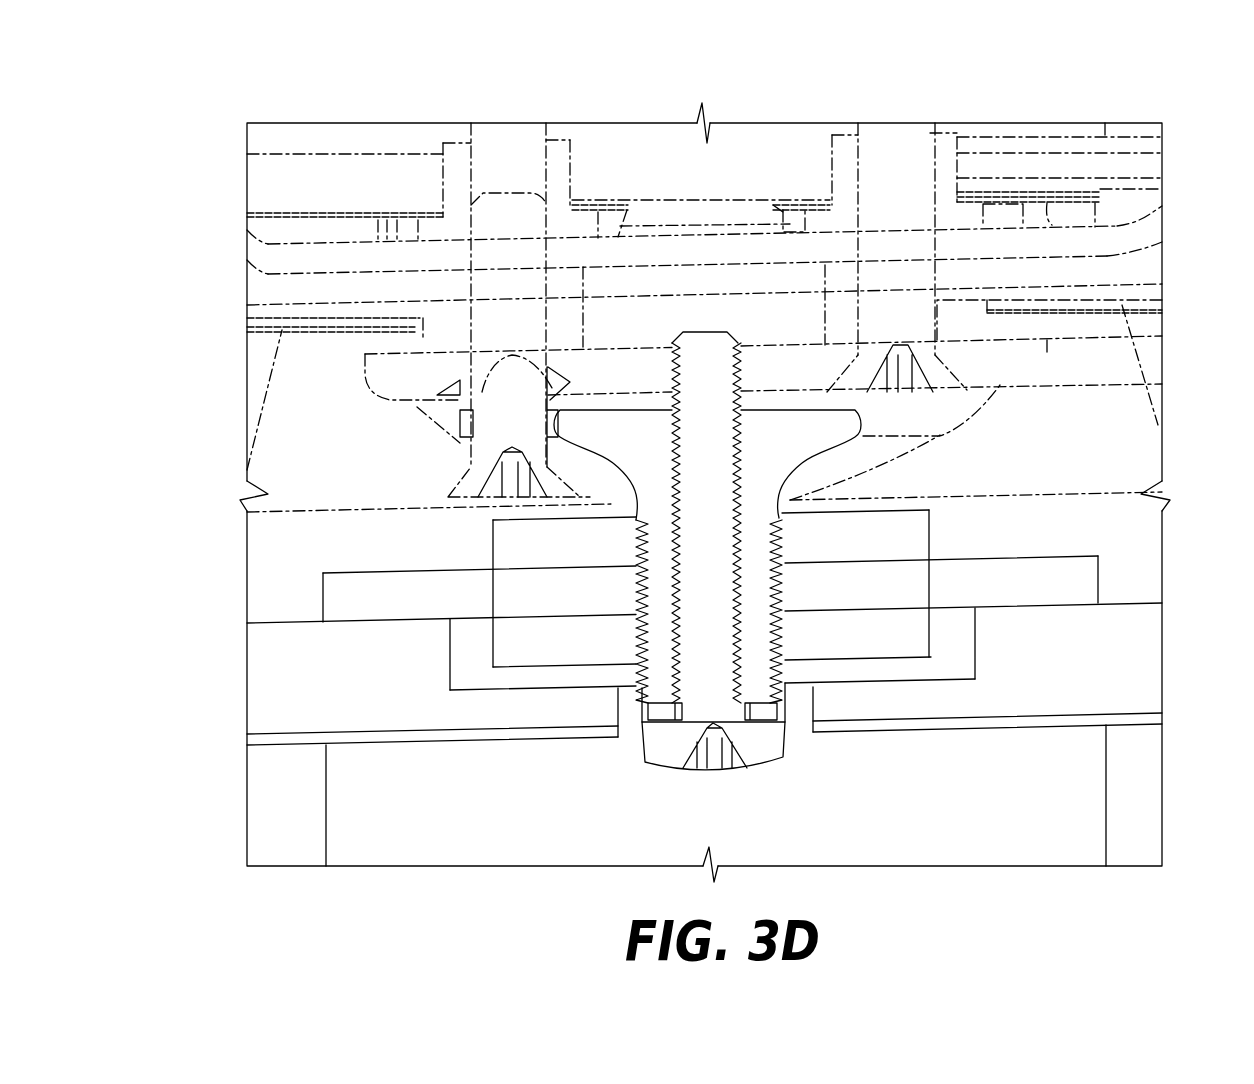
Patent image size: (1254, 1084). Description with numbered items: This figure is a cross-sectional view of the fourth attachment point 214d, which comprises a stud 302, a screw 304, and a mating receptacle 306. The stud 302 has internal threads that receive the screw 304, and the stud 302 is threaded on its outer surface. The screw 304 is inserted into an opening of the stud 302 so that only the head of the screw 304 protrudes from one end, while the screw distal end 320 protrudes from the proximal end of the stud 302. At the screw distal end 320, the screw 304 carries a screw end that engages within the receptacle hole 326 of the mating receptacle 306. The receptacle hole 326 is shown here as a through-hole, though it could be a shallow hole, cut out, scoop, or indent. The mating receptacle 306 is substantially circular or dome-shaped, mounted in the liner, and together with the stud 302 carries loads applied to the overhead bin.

The fourth attachment point 214d is at (360, 115).
The stud 302 is at (624, 484).
The screw 304 is at (657, 753).
The mating receptacle 306 is at (378, 380).
The screw distal end 320 is at (664, 360).
The receptacle hole 326 is at (760, 375).